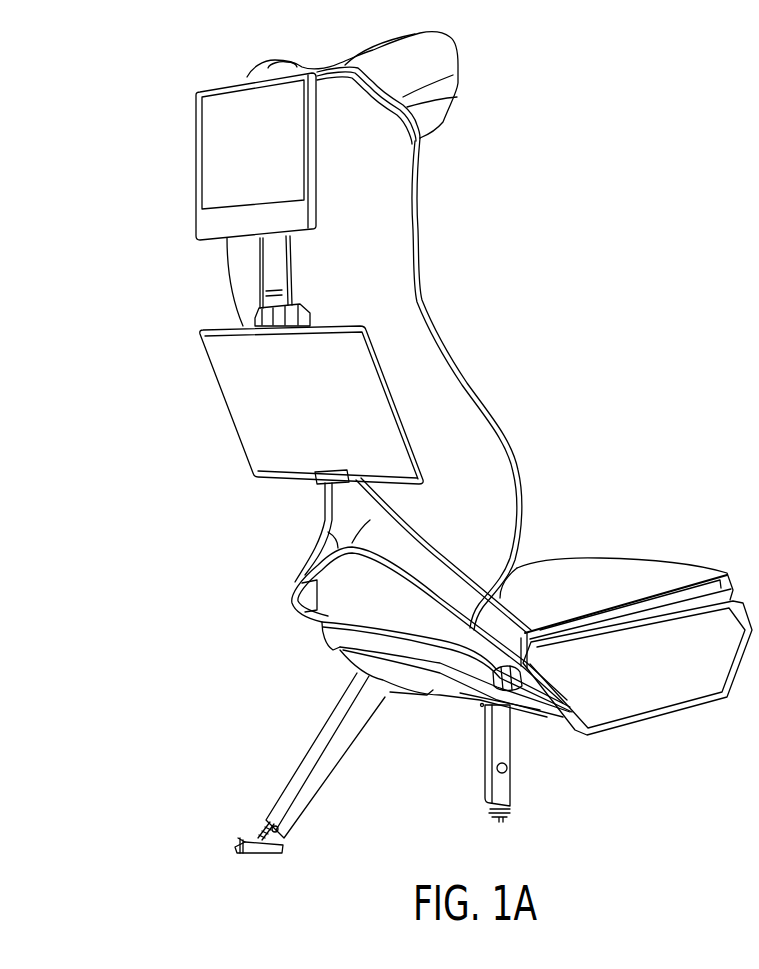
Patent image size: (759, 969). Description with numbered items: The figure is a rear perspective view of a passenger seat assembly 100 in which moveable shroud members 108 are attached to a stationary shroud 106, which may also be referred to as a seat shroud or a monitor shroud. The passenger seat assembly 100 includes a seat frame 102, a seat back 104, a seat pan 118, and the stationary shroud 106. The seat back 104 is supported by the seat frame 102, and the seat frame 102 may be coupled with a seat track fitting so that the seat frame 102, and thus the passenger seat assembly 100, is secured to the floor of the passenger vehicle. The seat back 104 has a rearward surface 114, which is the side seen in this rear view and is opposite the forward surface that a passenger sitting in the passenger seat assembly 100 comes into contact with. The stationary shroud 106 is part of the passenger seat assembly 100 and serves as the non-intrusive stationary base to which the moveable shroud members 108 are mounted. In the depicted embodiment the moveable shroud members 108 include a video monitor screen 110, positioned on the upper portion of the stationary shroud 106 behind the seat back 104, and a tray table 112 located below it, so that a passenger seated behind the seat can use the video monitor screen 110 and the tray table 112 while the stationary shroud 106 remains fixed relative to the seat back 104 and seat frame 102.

The passenger seat assembly 100 is at (690, 108).
The seat frame 102 is at (650, 698).
The seat back 104 is at (490, 467).
The stationary shroud 106 is at (345, 505).
The moveable shroud members 108 is at (173, 174).
The video monitor screen 110 is at (200, 113).
The tray table 112 is at (255, 448).
The rearward surface 114 is at (397, 233).
The seat pan 118 is at (633, 577).